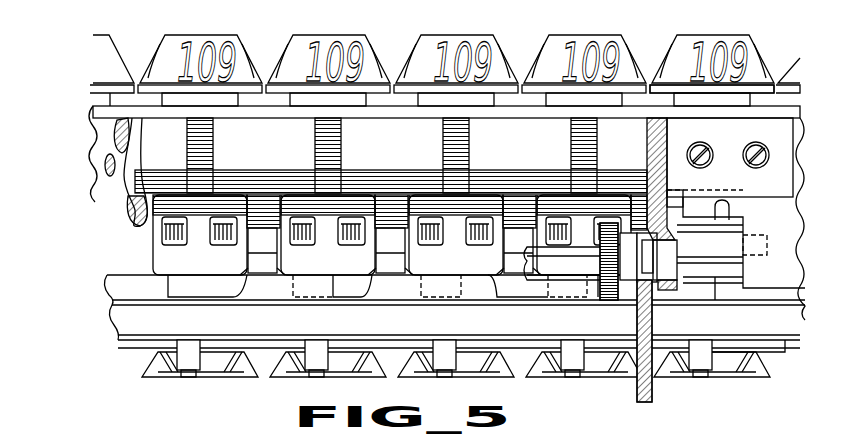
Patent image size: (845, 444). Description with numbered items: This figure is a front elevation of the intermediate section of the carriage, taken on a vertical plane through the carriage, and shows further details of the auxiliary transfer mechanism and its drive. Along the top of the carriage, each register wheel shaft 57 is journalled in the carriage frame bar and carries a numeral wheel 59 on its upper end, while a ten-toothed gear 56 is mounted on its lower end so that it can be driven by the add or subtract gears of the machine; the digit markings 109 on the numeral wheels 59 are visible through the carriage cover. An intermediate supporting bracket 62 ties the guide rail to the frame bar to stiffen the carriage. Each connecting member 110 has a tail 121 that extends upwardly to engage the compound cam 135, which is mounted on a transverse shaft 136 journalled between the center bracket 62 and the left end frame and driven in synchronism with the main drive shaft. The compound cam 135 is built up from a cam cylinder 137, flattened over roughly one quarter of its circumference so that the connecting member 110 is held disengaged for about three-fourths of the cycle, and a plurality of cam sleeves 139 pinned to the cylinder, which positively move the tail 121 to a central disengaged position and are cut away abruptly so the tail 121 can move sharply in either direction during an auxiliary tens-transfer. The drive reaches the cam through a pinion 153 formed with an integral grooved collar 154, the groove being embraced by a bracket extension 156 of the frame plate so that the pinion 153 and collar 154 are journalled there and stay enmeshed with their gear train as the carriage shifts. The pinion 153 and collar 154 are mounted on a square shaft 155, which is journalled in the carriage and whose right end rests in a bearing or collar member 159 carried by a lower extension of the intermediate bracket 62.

The ten-toothed gear 56 is at (712, 372).
The register wheel shaft 57 is at (707, 217).
The numeral wheel 59 is at (677, 64).
The intermediate supporting bracket 62 is at (660, 136).
The key cap 109 is at (445, 68).
The connecting member 110 is at (177, 263).
The tail 121 is at (325, 232).
The compound cam 135 is at (300, 138).
The transverse shaft 136 is at (117, 180).
The cam cylinder 137 is at (457, 140).
The cam sleeve 139 is at (537, 133).
The pinion 153 is at (605, 290).
The grooved collar 154 is at (630, 277).
The square shaft 155 is at (536, 266).
The bracket extension 156 is at (643, 390).
The bearing or collar member 159 is at (667, 250).